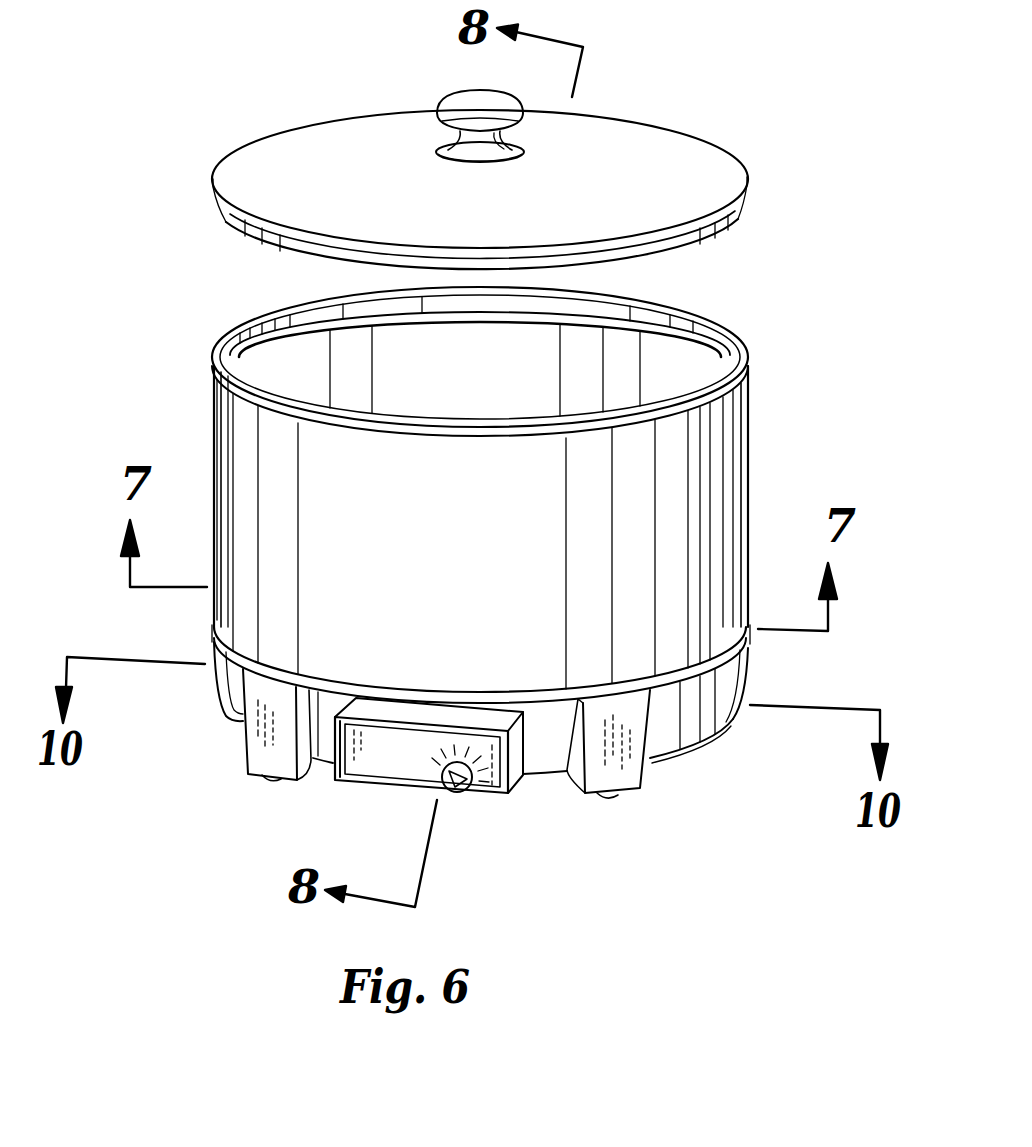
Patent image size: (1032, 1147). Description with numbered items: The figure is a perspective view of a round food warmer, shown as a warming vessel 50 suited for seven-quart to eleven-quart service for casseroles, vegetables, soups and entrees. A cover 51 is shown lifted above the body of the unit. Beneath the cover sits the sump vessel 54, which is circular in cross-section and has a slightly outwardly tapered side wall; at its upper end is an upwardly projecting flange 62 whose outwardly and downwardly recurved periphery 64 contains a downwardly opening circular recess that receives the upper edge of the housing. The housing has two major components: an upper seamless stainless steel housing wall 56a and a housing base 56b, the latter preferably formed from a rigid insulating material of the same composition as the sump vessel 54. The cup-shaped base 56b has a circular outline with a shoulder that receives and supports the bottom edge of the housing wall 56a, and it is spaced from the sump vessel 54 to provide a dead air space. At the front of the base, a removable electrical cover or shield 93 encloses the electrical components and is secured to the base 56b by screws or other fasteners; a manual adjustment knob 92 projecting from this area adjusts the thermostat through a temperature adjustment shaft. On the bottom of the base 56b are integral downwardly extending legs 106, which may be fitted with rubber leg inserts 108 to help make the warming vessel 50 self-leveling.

The warming vessel 50 is at (200, 400).
The cover 51 is at (636, 136).
The sump vessel 54 is at (696, 306).
The housing wall 56a is at (222, 456).
The housing base 56b is at (231, 690).
The flange 62 is at (727, 343).
The recurved periphery 64 is at (747, 358).
The manual adjustment knob 92 is at (455, 793).
The electrical cover 93 is at (388, 775).
The legs 106 is at (258, 748).
The rubber leg inserts 108 is at (272, 782).